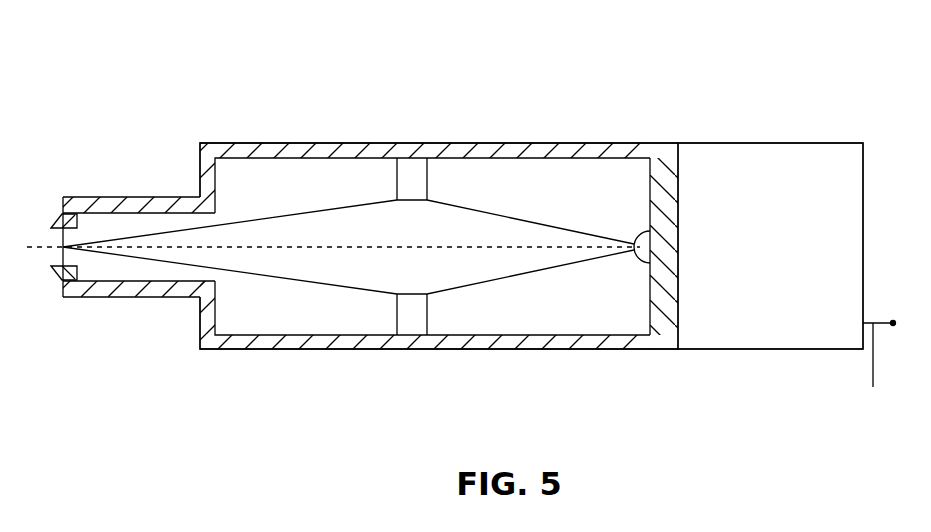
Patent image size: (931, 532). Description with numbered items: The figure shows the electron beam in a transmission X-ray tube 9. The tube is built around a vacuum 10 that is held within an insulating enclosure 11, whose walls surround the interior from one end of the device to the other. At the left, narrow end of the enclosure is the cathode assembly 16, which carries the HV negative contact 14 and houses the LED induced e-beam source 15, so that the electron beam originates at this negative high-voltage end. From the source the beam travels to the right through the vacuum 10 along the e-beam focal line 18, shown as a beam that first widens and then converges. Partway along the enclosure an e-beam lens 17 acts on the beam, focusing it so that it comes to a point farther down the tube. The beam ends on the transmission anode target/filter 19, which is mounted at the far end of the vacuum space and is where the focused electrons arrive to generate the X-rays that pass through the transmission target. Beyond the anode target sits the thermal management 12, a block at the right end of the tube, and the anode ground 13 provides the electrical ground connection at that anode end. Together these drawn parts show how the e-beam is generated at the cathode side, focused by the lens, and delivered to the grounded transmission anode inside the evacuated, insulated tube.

The transmission X-ray tube 9 is at (480, 78).
The vacuum 10 is at (508, 315).
The insulating enclosure 11 is at (332, 150).
The thermal management 12 is at (762, 153).
The anode ground 13 is at (875, 370).
The HV negative contact 14 is at (53, 215).
The LED induced e-beam source 15 is at (90, 283).
The cathode assembly 16 is at (138, 197).
The e-beam lens 17 is at (412, 317).
The e-beam focal line 18 is at (477, 230).
The transmission anode target/filter 19 is at (643, 262).